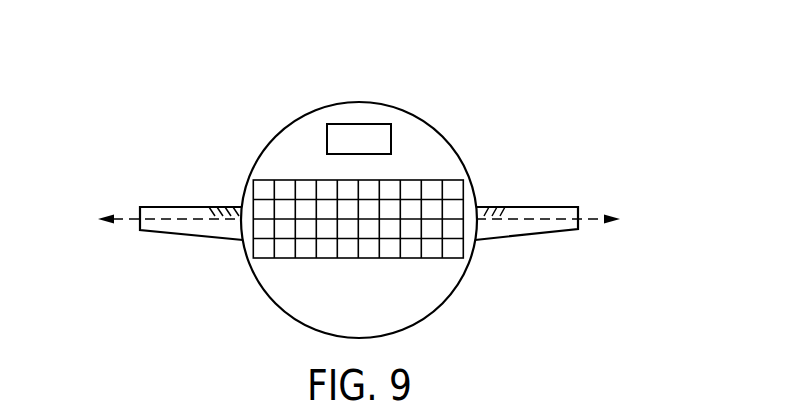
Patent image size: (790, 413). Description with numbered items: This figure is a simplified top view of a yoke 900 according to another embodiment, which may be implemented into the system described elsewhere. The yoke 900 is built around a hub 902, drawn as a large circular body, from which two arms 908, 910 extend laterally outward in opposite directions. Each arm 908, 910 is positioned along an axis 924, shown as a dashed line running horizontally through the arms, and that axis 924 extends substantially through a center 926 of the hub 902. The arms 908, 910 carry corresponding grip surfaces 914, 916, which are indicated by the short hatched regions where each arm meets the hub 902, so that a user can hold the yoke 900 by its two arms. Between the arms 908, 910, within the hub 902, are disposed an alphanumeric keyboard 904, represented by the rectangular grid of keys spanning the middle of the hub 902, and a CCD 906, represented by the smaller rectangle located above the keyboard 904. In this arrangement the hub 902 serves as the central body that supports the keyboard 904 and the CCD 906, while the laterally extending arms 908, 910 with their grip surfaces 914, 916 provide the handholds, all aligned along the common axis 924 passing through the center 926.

The yoke 900 is at (366, 190).
The hub 902 is at (452, 145).
The alphanumeric keyboard 904 is at (383, 258).
The CCD 906 is at (360, 124).
The arm 908 is at (168, 205).
The arm 910 is at (543, 205).
The grip surface 914 is at (217, 205).
The grip surface 916 is at (502, 205).
The axis 924 is at (595, 219).
The center 926 is at (359, 219).